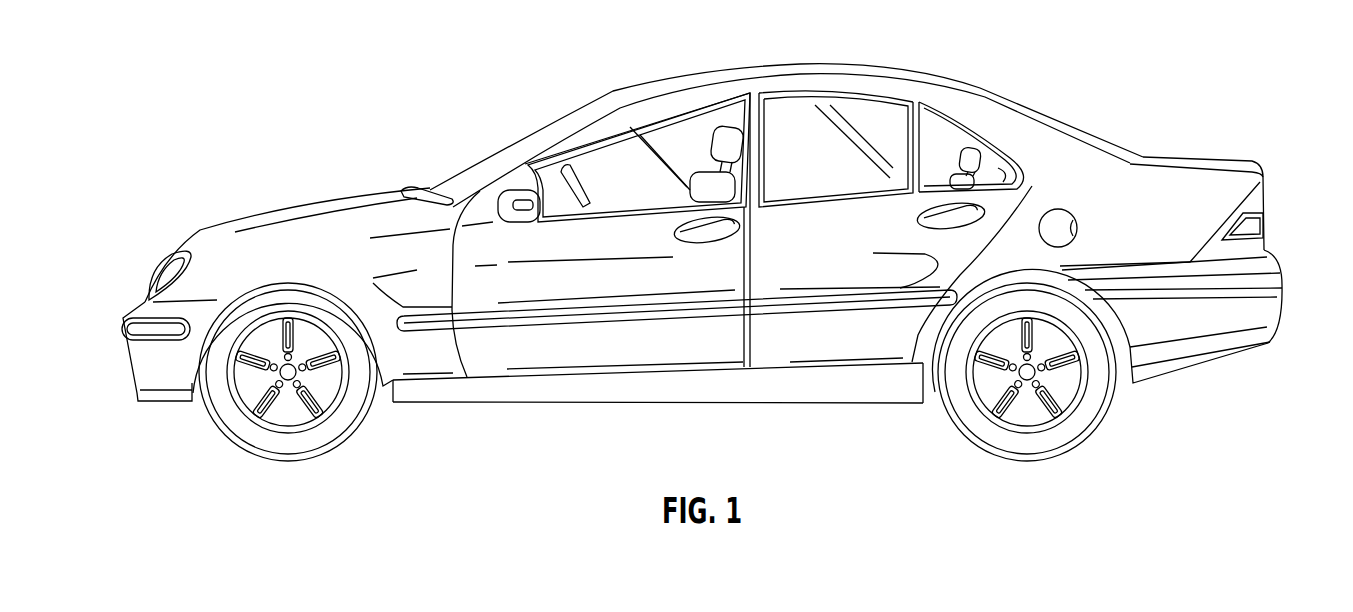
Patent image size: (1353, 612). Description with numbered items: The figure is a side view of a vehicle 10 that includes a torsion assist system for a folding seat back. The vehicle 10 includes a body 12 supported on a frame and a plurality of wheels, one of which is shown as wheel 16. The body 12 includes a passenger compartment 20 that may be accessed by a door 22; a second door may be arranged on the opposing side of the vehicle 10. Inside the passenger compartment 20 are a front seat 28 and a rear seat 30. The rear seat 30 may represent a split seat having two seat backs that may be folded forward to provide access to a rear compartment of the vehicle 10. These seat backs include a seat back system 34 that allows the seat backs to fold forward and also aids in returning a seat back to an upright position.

The vehicle 10 is at (240, 80).
The body 12 is at (334, 184).
The wheel 16 is at (347, 408).
The passenger compartment 20 is at (597, 165).
The door 22 is at (585, 283).
The front seat 28 is at (706, 134).
The rear seat 30 is at (945, 140).
The seat back system 34 is at (953, 184).